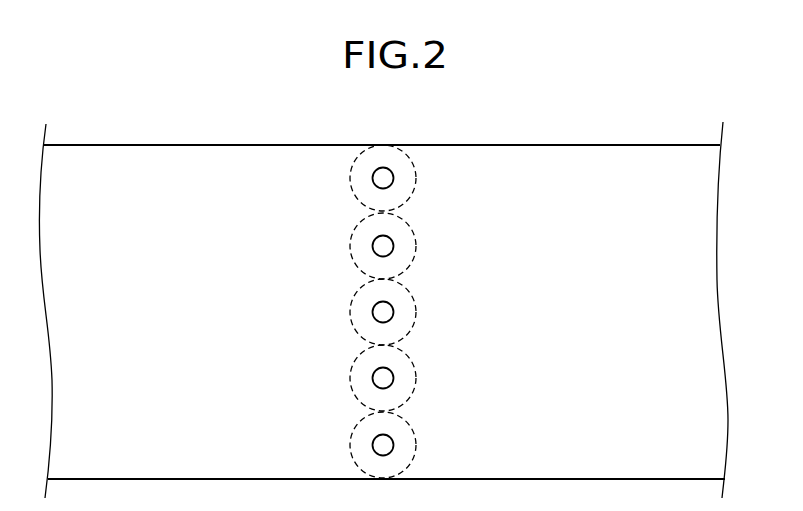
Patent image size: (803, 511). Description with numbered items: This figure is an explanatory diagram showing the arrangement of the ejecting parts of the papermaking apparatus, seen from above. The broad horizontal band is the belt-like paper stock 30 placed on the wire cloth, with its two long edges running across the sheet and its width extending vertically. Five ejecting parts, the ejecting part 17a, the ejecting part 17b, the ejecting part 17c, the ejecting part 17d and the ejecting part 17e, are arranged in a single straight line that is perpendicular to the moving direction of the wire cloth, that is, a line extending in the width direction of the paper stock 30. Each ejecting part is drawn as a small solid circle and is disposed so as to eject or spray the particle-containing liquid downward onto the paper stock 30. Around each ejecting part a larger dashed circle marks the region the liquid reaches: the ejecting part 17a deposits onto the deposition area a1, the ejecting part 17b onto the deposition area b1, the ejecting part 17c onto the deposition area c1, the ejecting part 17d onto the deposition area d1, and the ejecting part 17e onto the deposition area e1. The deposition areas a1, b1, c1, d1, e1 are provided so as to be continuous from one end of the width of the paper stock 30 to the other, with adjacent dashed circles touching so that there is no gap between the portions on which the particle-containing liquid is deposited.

The paper stock 30 is at (608, 158).
The ejecting part 17a is at (394, 176).
The ejecting part 17b is at (394, 244).
The ejecting part 17c is at (394, 310).
The ejecting part 17d is at (394, 376).
The ejecting part 17e is at (394, 443).
The deposition area a1 is at (350, 181).
The deposition area b1 is at (350, 249).
The deposition area c1 is at (350, 315).
The deposition area d1 is at (350, 381).
The deposition area e1 is at (350, 448).